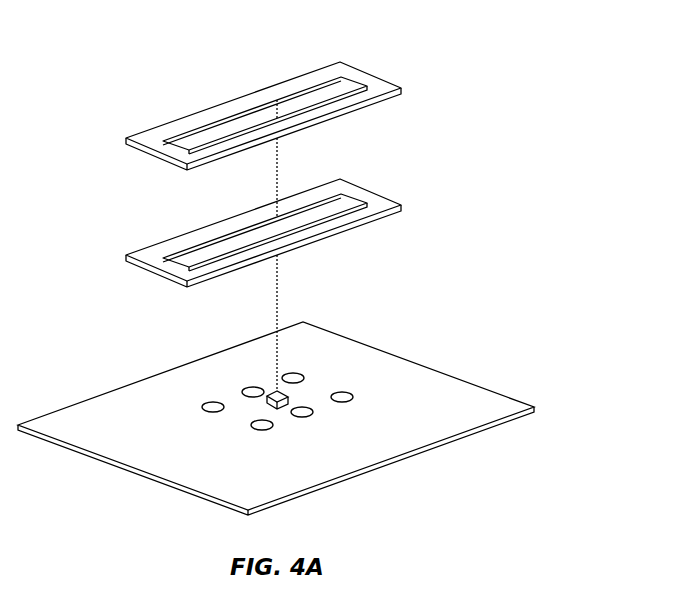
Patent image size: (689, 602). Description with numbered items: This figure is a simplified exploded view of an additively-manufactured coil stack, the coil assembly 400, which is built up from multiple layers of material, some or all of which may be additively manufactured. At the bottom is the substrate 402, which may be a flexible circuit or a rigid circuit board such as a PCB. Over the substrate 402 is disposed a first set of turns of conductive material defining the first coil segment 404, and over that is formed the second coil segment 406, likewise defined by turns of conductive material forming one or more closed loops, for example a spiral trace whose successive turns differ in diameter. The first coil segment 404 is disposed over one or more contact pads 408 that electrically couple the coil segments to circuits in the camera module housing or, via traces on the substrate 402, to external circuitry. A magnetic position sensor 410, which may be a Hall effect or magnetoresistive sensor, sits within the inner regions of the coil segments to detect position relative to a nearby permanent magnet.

The coil assembly 400 is at (85, 55).
The substrate 402 is at (537, 408).
The first coil segment 404 is at (404, 204).
The second coil segment 406 is at (404, 88).
The contact pad 408 is at (350, 392).
The magnetic position sensor 410 is at (252, 390).